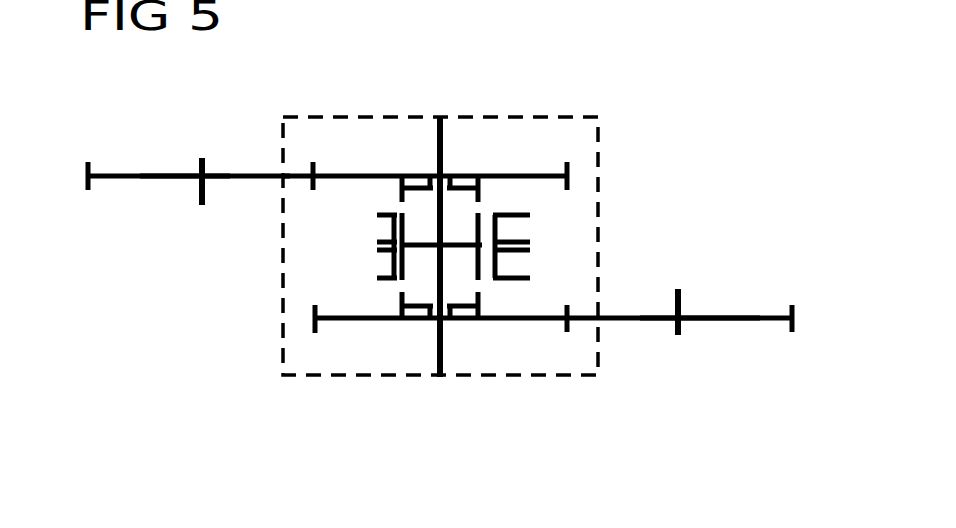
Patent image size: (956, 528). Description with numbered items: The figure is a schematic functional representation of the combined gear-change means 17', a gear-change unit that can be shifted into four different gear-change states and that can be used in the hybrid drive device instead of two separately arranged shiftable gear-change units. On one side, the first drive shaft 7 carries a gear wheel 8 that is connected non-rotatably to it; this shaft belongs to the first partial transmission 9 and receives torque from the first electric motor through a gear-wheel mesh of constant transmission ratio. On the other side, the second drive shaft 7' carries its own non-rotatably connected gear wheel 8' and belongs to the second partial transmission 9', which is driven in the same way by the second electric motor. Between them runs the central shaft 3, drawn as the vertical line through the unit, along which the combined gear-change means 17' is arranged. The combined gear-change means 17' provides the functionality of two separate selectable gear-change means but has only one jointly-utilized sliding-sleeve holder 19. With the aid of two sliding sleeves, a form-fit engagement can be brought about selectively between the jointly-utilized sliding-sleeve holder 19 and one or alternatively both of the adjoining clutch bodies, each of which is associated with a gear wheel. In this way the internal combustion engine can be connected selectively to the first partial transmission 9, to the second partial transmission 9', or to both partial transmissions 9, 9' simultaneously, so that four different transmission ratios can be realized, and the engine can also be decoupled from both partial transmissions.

The central shaft 3 is at (443, 140).
The first drive shaft 7 is at (670, 346).
The second drive shaft 7' is at (211, 149).
The gear wheel 8 is at (695, 348).
The gear wheel 8' is at (189, 147).
The first partial transmission 9 is at (700, 264).
The second partial transmission 9' is at (153, 222).
The combined gear-change means 17' is at (400, 246).
The jointly-utilized sliding-sleeve holder 19 is at (425, 250).